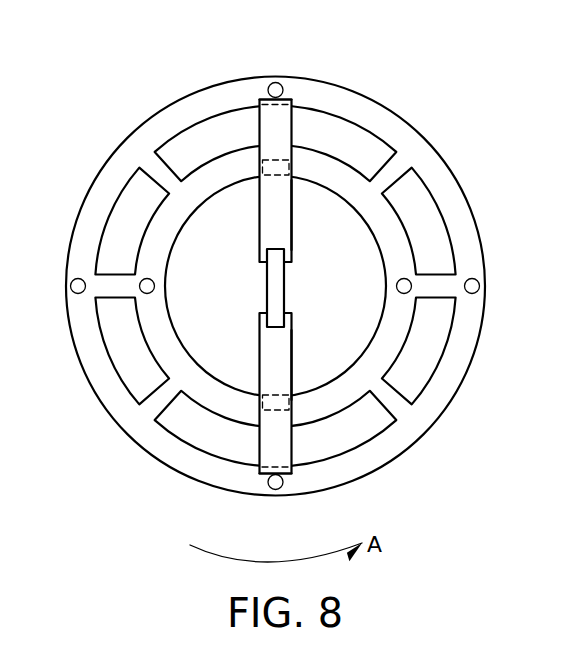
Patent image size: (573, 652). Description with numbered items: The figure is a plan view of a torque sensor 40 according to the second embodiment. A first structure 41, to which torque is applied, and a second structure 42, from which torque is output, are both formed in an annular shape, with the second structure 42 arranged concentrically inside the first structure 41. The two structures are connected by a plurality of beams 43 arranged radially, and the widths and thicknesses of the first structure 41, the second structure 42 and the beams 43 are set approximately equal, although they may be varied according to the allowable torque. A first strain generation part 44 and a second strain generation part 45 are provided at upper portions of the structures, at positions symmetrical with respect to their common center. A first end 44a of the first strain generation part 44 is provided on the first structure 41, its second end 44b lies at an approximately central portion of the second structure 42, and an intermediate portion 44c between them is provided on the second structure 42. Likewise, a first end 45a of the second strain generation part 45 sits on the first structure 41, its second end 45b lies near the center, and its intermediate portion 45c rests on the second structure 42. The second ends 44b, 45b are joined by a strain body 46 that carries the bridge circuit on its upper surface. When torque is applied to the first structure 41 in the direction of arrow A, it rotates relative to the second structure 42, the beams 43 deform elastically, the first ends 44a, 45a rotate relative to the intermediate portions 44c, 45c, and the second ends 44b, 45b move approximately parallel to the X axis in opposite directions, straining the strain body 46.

The torque sensor 40 is at (271, 289).
The first structure 41 is at (115, 172).
The second structure 42 is at (155, 245).
The beams 43 is at (162, 397).
The first strain generation part 44 is at (391, 147).
The first end of the first strain generation part 44a is at (290, 97).
The second end of the first strain generation part 44b is at (292, 217).
The intermediate portion of the first strain generation part 44c is at (282, 158).
The second strain generation part 45 is at (388, 430).
The first end of the second strain generation part 45a is at (287, 473).
The second end of the second strain generation part 45b is at (292, 353).
The intermediate portion of the second strain generation part 45c is at (277, 408).
The strain body 46 is at (285, 282).